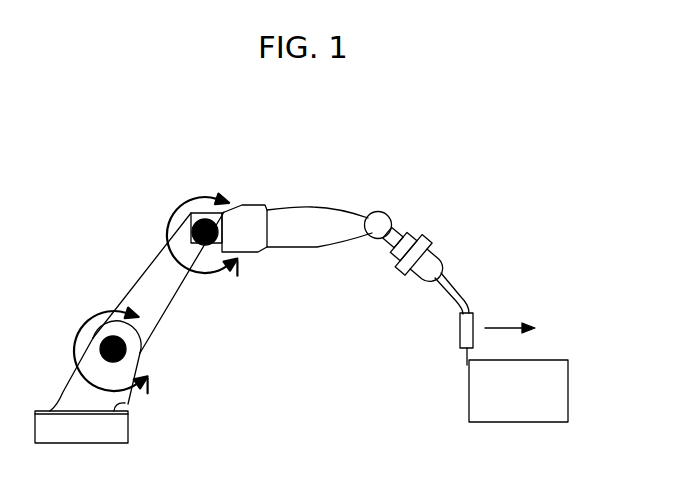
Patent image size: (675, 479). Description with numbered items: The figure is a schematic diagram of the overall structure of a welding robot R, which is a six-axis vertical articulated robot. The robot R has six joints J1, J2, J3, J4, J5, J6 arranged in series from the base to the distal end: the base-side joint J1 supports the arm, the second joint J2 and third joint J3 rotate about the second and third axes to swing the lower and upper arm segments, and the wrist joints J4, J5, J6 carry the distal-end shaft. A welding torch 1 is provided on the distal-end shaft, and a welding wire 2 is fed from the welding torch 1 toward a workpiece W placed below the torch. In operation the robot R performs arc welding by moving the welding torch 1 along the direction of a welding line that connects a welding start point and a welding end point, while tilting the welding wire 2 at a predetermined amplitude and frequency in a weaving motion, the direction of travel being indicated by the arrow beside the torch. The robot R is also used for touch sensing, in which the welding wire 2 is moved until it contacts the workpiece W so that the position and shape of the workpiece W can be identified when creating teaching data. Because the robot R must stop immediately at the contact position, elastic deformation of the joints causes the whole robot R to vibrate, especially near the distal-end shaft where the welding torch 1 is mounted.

The welding robot R is at (337, 154).
The first joint J1 is at (125, 403).
The second joint J2 is at (126, 349).
The third joint J3 is at (190, 236).
The fourth joint J4 is at (266, 207).
The fifth joint J5 is at (381, 212).
The sixth joint J6 is at (433, 250).
The welding torch 1 is at (477, 309).
The welding wire 2 is at (466, 356).
The workpiece W is at (568, 377).